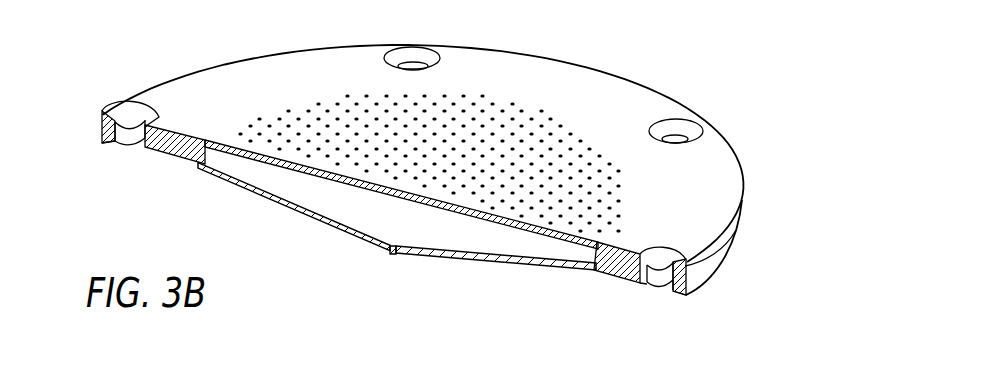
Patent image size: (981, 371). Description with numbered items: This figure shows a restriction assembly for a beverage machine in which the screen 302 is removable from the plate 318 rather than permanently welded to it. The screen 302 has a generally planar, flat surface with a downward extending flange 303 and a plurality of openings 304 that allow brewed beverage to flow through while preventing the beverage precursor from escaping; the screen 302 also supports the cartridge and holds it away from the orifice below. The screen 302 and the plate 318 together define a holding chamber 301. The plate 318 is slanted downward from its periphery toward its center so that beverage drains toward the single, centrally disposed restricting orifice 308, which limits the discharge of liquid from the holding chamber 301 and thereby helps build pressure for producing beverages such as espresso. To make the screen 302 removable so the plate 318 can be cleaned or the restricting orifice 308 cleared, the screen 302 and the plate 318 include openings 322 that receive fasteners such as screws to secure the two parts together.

The holding chamber 301 is at (283, 193).
The screen 302 is at (565, 97).
The flange 303 is at (103, 122).
The openings 304 is at (623, 117).
The restricting orifice 308 is at (393, 255).
The plate 318 is at (507, 251).
The openings 322 is at (130, 127).